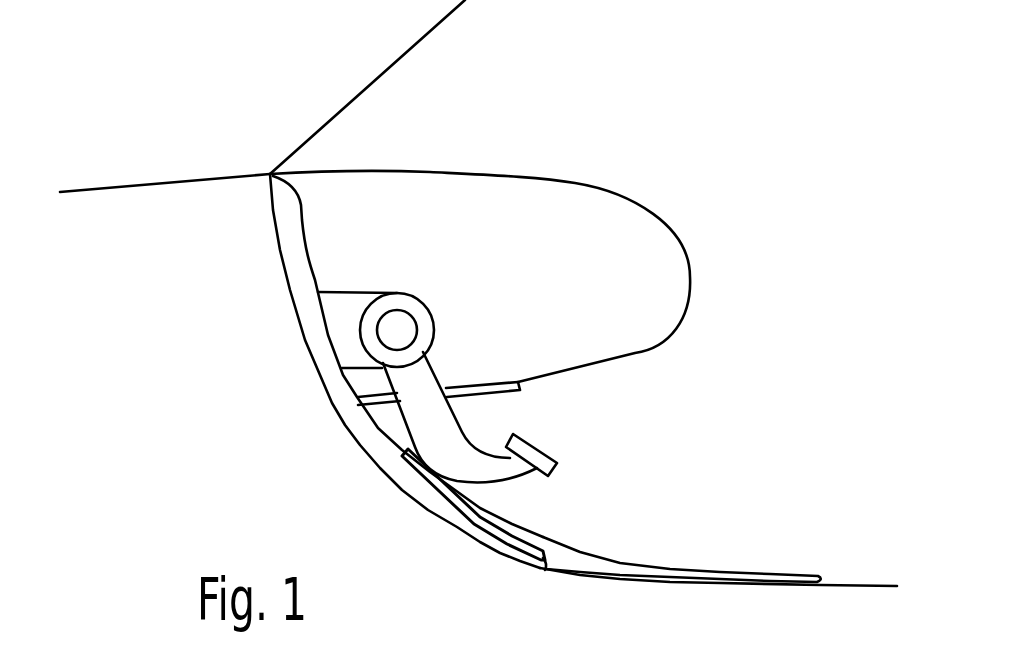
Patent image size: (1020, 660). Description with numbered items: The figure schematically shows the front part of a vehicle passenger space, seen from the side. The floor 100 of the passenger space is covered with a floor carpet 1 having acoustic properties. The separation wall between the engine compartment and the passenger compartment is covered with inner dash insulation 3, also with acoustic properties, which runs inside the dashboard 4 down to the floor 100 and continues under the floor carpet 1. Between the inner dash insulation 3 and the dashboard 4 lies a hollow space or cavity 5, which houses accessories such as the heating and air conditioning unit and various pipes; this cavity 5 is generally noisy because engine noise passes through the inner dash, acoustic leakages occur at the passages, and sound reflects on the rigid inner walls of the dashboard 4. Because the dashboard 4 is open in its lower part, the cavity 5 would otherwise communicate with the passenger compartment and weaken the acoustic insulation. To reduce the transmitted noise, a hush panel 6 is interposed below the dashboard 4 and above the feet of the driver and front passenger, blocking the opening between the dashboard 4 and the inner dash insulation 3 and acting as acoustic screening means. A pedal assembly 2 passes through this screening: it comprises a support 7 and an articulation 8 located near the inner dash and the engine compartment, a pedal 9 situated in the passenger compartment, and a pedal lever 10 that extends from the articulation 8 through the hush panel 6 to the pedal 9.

The floor carpet 1 is at (720, 572).
The pedal assembly 2 is at (592, 433).
The inner dash insulation 3 is at (302, 277).
The dashboard 4 is at (672, 227).
The hollow space or cavity 5 is at (497, 343).
The hush panel 6 is at (368, 408).
The support 7 is at (347, 300).
The articulation 8 is at (390, 330).
The pedal 9 is at (557, 467).
The pedal lever 10 is at (447, 453).
The floor 100 is at (838, 585).